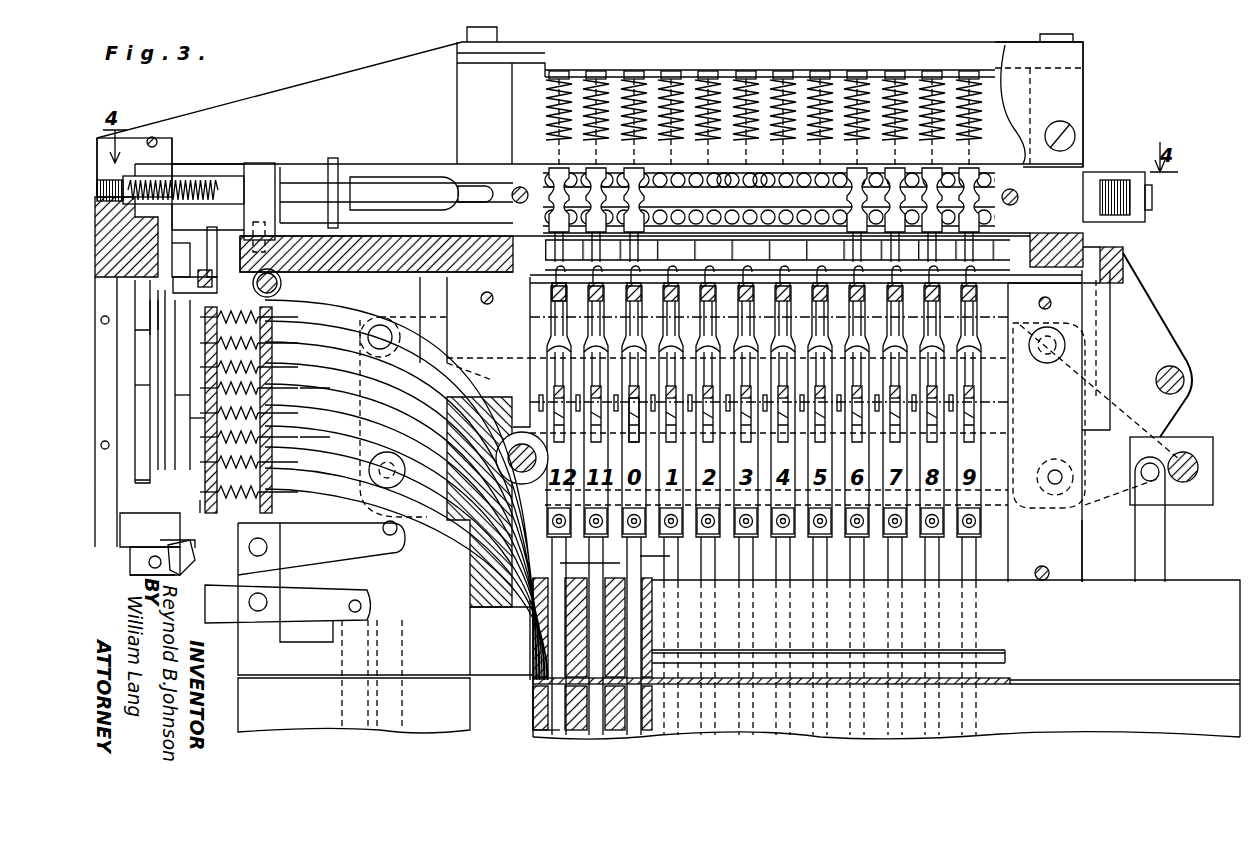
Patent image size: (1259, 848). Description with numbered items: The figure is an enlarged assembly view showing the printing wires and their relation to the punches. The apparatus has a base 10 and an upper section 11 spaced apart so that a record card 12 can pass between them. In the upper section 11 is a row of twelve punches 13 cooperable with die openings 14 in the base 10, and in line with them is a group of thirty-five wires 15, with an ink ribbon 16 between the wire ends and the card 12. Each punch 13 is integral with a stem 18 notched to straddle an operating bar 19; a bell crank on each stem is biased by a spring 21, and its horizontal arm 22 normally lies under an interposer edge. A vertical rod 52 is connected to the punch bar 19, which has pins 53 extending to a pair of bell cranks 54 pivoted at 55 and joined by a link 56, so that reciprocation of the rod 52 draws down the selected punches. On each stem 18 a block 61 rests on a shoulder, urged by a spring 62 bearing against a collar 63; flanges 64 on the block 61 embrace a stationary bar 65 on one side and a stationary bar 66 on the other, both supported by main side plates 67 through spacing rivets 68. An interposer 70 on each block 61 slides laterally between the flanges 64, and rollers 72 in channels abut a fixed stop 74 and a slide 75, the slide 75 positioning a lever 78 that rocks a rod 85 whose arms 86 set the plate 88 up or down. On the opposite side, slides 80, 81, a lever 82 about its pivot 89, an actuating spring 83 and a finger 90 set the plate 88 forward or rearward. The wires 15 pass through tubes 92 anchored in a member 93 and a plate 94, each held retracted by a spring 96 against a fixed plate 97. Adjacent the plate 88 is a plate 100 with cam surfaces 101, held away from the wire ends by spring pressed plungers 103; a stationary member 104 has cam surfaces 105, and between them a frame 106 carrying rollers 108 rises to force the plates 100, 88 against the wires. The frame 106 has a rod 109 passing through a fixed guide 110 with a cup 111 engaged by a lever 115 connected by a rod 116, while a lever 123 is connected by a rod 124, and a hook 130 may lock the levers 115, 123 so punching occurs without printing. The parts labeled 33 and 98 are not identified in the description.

The base 10 is at (535, 728).
The upper section 11 is at (466, 660).
The record card 12 is at (533, 708).
The punches 13 is at (615, 555).
The die openings 14 is at (625, 728).
The wires 15 is at (535, 622).
The ink ribbon 16 is at (533, 680).
The stem 18 is at (628, 374).
The operating bar 19 is at (1003, 520).
The spring 21 is at (590, 296).
The horizontal arm 22 is at (706, 442).
The pivot stud 33 is at (524, 473).
The vertical rod 52 is at (1168, 560).
The pins 53 is at (1200, 467).
The bell cranks 54 is at (1195, 432).
The pivot 55 is at (375, 480).
The link 56 is at (1040, 356).
The block 61 is at (756, 190).
The spring 62 is at (730, 86).
The collar 63 is at (600, 84).
The flanges 64 is at (644, 146).
The stationary bar 65 is at (520, 160).
The stationary bar 66 is at (336, 162).
The main side plates 67 is at (1030, 100).
The spacing rivets 68 is at (515, 188).
The interposer 70 is at (640, 199).
The rollers 72 is at (722, 190).
The fixed stop 74 is at (1128, 188).
The slide 75 is at (452, 172).
The lever 78 is at (276, 246).
The slide 80 is at (300, 167).
The slide 81 is at (232, 172).
The lever 82 is at (262, 170).
The actuating spring 83 is at (190, 177).
The rod 85 is at (282, 285).
The arms 86 is at (272, 306).
The plate 88 is at (188, 396).
The pivot 89 is at (259, 232).
The finger 90 is at (207, 245).
The tubes 92 is at (320, 440).
The member 93 is at (452, 535).
The plate 94 is at (272, 372).
The spring 96 is at (272, 432).
The fixed plate 97 is at (217, 506).
The slide 98 is at (200, 420).
The plate 100 is at (140, 552).
The cam surfaces 101 is at (255, 285).
The spring pressed plungers 103 is at (160, 330).
The stationary member 104 is at (148, 386).
The cam surfaces 105 is at (150, 335).
The frame 106 is at (140, 522).
The rollers 108 is at (135, 330).
The rod 109 is at (185, 547).
The fixed guide 110 is at (148, 562).
The cup 111 is at (160, 572).
The lever 115 is at (321, 548).
The rod 116 is at (400, 690).
The lever 123 is at (288, 604).
The rod 124 is at (348, 694).
The hook 130 is at (182, 576).